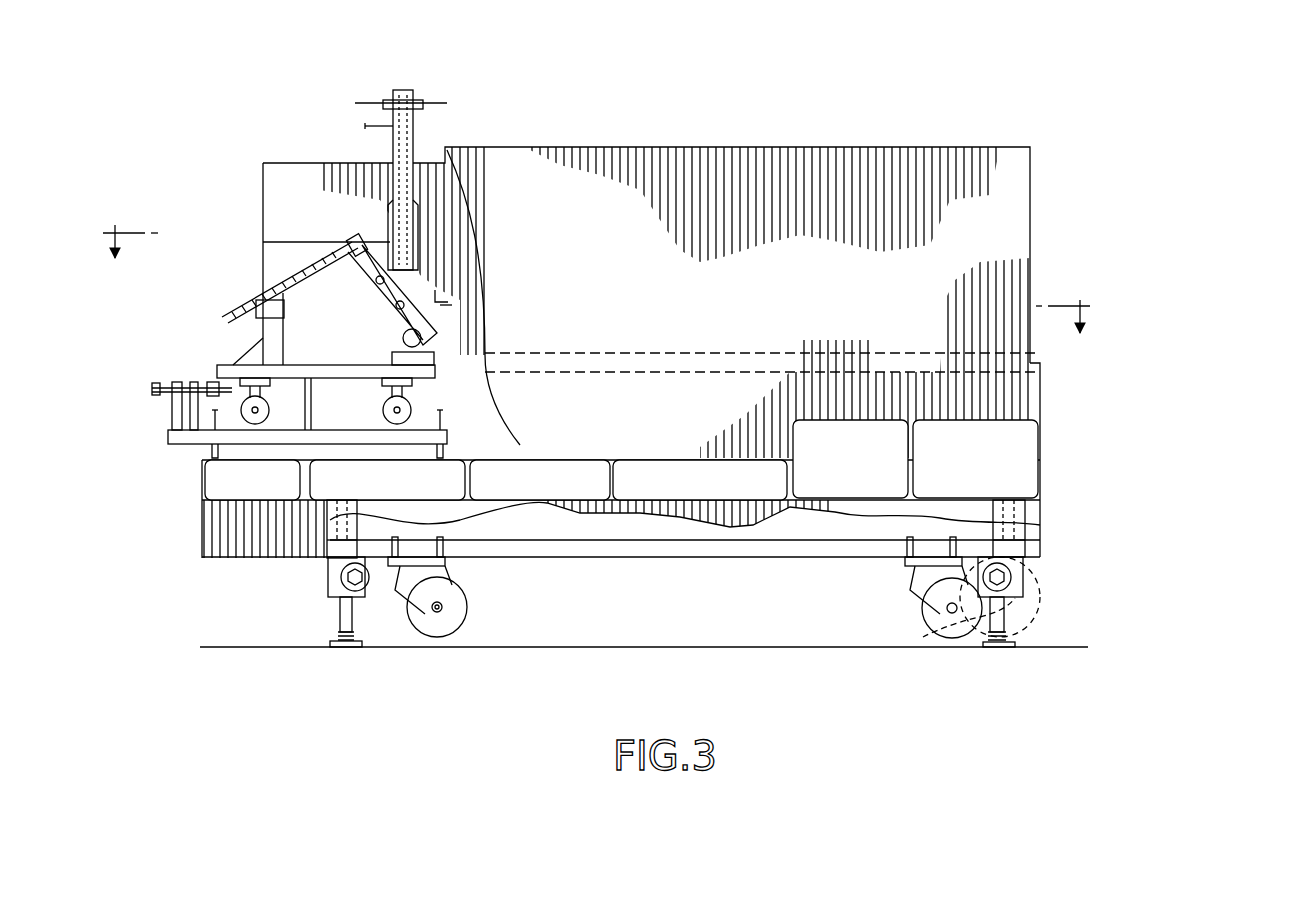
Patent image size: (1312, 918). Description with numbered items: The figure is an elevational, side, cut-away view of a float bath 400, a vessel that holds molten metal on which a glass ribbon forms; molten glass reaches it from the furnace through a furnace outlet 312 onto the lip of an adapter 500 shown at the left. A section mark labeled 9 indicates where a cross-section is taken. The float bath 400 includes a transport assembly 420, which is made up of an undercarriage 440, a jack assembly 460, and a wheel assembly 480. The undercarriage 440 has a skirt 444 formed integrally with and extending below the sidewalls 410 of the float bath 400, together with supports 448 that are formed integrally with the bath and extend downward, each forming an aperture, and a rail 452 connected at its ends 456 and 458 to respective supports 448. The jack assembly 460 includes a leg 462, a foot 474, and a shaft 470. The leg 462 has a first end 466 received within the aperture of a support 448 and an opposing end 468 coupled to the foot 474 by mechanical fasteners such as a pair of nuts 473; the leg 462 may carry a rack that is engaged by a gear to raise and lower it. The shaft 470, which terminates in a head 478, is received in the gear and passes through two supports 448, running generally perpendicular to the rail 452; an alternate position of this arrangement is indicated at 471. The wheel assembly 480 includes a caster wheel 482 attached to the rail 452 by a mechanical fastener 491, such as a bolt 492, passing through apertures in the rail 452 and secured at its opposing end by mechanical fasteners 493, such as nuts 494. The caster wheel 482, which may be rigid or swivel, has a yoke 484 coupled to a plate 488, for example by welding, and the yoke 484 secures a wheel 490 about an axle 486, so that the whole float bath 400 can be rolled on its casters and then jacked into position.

The float bath 400 is at (975, 100).
The sidewalls 410 is at (1025, 218).
The furnace outlet 312 is at (393, 190).
The adapter 500 is at (218, 318).
The section line 9 is at (596, 265).
The skirt 444 is at (205, 520).
The undercarriage 440 is at (140, 532).
The end 456 is at (300, 567).
The wheel assembly 480 is at (530, 597).
The rail 452 is at (748, 548).
The nuts 494 is at (440, 547).
The mechanical fasteners 493 is at (470, 540).
The first end 466 is at (1065, 497).
The end 458 is at (1070, 548).
The bolt 492 is at (400, 550).
The support 448 is at (1000, 528).
The caster wheel 482 is at (483, 625).
The plate 488 is at (445, 565).
The mechanical fastener 491 is at (385, 592).
The yoke 484 is at (425, 598).
The wheel 490 is at (425, 620).
The axle 486 is at (437, 612).
The head 478 is at (345, 580).
The caster 471 is at (950, 683).
The shaft 470 is at (923, 640).
The transport assembly 420 is at (1225, 603).
The leg 462 is at (1075, 620).
The jack assembly 460 is at (1080, 625).
The foot 474 is at (1030, 660).
The nuts 473 is at (995, 637).
The opposing end 468 is at (1020, 660).